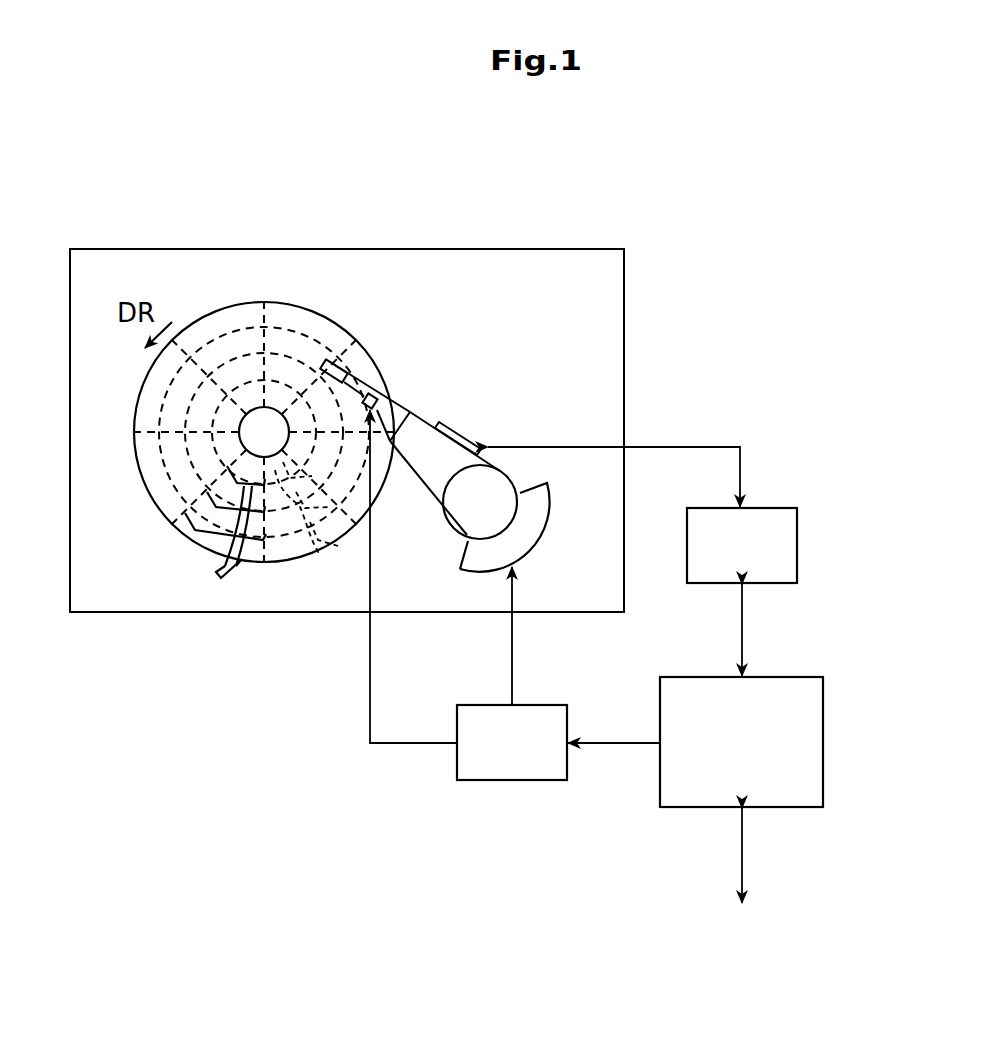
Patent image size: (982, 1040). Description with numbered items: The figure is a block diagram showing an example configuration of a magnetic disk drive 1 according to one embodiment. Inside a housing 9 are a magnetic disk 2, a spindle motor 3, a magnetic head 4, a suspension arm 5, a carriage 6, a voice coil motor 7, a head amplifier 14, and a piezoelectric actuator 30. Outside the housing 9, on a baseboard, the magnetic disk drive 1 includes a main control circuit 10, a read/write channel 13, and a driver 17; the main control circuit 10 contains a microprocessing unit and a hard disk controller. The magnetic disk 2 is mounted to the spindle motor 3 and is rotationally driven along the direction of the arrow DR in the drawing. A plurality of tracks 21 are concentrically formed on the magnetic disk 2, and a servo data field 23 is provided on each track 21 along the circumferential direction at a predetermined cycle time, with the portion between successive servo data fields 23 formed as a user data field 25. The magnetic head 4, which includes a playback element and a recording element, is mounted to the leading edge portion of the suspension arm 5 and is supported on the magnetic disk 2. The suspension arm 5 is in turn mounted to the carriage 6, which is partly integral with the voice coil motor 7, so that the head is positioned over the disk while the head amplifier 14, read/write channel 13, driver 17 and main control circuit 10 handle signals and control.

The magnetic disk drive 1 is at (748, 196).
The magnetic disk 2 is at (252, 304).
The spindle motor 3 is at (253, 418).
The magnetic head 4 is at (336, 358).
The suspension arm 5 is at (402, 420).
The carriage 6 is at (428, 488).
The voice coil motor 7 is at (452, 558).
The housing 9 is at (540, 248).
The main control circuit 10 is at (795, 677).
The read/write channel 13 is at (773, 507).
The head amplifier 14 is at (462, 427).
The driver 17 is at (512, 781).
The track 21 is at (320, 553).
The servo data field 23 is at (132, 413).
The user data field 25 is at (225, 538).
The piezoelectric actuator 30 is at (392, 400).